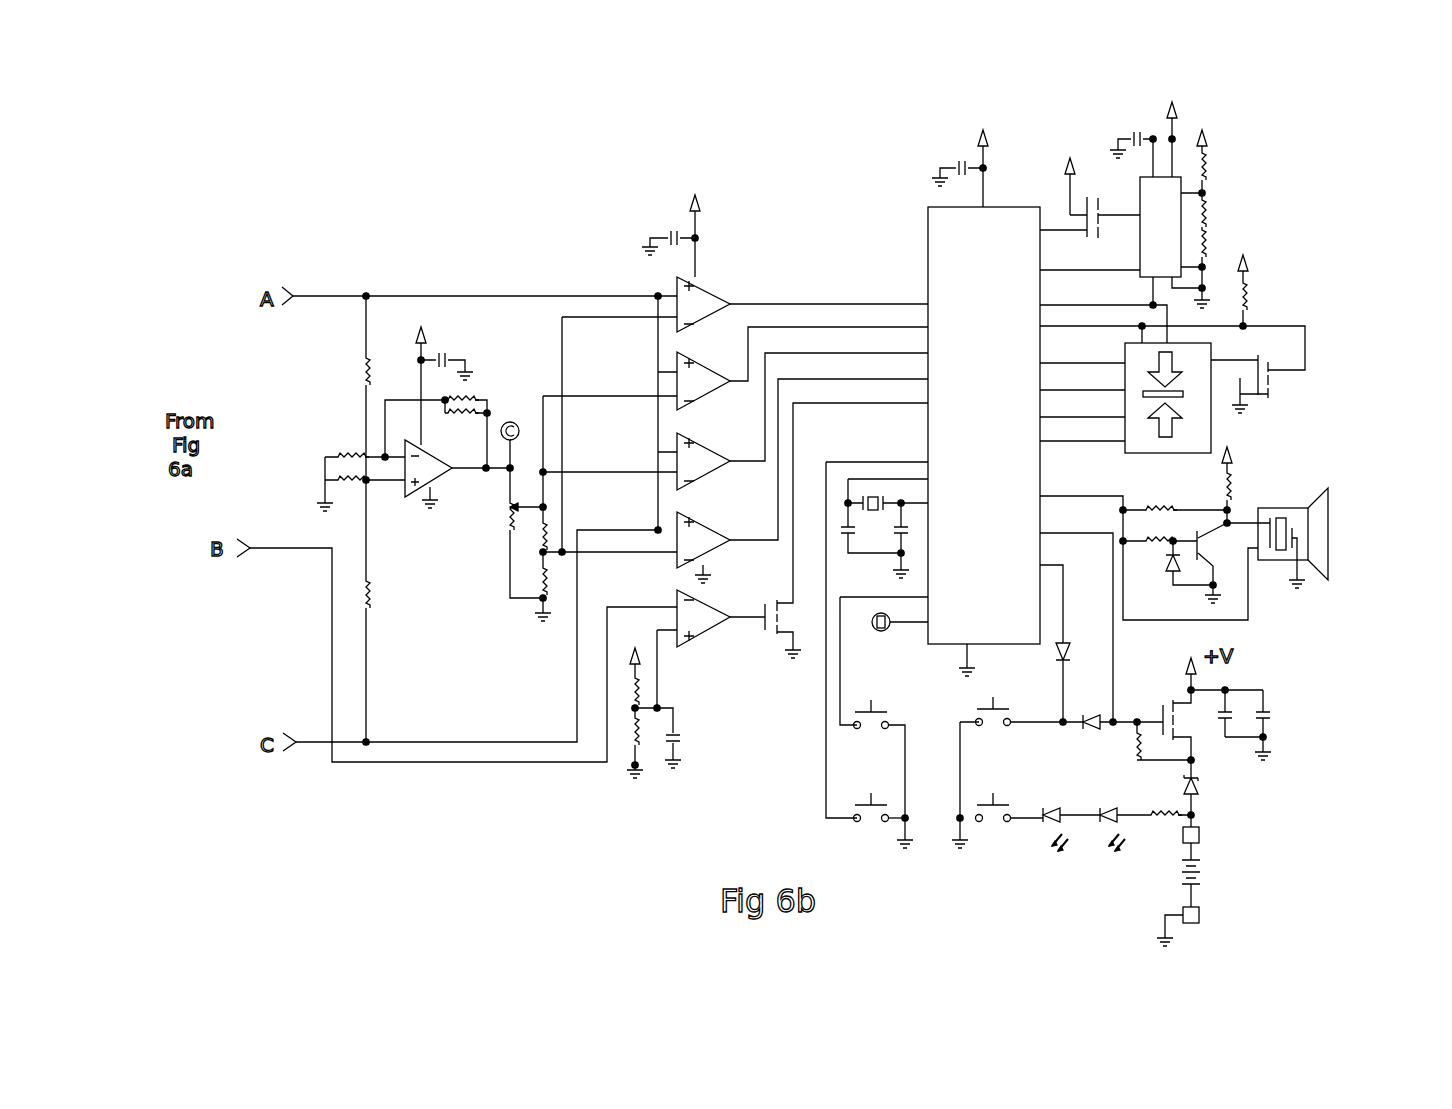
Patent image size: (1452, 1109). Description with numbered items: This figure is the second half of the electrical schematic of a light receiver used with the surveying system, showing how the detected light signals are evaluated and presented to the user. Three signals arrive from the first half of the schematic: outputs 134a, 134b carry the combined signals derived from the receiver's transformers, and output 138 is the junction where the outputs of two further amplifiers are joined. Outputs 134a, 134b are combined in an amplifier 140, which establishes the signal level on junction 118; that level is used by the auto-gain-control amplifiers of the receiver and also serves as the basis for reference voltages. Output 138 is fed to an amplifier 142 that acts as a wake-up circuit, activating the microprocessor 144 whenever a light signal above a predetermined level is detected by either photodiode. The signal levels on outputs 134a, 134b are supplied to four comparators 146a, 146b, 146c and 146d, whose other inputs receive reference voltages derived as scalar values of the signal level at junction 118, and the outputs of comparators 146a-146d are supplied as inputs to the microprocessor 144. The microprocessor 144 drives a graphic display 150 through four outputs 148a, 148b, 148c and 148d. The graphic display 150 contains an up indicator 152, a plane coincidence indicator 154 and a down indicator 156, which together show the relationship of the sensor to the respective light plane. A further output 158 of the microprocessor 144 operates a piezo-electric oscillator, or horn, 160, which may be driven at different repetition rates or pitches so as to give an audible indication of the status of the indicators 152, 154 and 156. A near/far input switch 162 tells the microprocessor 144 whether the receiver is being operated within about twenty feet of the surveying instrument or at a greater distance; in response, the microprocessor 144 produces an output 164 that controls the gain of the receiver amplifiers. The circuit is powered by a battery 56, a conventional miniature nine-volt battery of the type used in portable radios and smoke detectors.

The output 134a is at (312, 290).
The output 134b is at (307, 750).
The output 138 is at (263, 538).
The junction 118 is at (512, 412).
The amplifier 140 is at (447, 492).
The amplifier 142 is at (708, 645).
The microprocessor 144 is at (924, 226).
The comparator 146a is at (715, 280).
The comparator 146b is at (709, 366).
The comparator 146c is at (735, 422).
The comparator 146d is at (711, 516).
The output 148a is at (1052, 364).
The output 148b is at (1052, 391).
The output 148c is at (1052, 418).
The output 148d is at (1052, 442).
The graphic display 150 is at (1182, 378).
The up indicator 152 is at (1152, 428).
The plane coincidence indicator 154 is at (1192, 386).
The down indicator 156 is at (1180, 352).
The output 158 is at (1135, 500).
The horn 160 is at (1330, 548).
The near/far input switch 162 is at (900, 716).
The output 164 is at (886, 636).
The battery 56 is at (1212, 872).